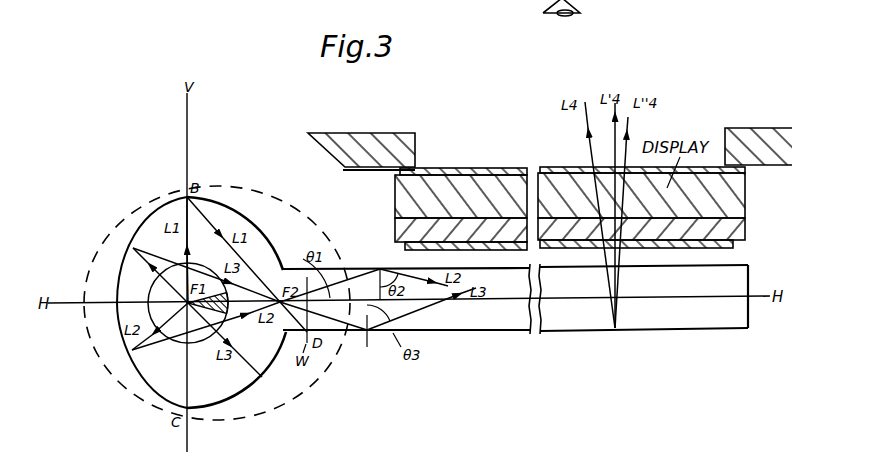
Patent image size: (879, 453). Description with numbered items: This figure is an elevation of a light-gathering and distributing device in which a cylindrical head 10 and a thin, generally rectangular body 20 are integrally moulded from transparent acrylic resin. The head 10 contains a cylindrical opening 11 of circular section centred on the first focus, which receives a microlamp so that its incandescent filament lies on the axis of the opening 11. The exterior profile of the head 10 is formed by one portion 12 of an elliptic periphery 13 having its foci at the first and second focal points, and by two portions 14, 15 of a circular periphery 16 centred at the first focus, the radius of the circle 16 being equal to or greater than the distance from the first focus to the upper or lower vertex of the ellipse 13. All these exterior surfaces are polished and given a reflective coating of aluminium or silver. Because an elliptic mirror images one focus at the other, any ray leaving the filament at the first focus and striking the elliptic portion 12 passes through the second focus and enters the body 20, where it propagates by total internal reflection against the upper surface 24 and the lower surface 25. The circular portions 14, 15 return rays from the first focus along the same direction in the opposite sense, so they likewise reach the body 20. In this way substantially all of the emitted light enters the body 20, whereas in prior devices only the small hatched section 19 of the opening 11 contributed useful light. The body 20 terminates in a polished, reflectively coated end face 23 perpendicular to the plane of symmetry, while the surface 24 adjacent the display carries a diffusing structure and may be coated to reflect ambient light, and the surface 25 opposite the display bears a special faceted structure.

The cylindrical head 10 is at (202, 304).
The cylindrical opening 11 is at (157, 312).
The elliptic portion 12 is at (133, 370).
The ellipse 13 is at (240, 423).
The circular portion 14 is at (263, 229).
The circular portion 15 is at (284, 365).
The circular periphery 16 is at (146, 208).
The hatched section 19 is at (206, 308).
The body 20 is at (488, 318).
The end face 23 is at (751, 282).
The upper surface 24 is at (716, 262).
The lower surface 25 is at (587, 331).